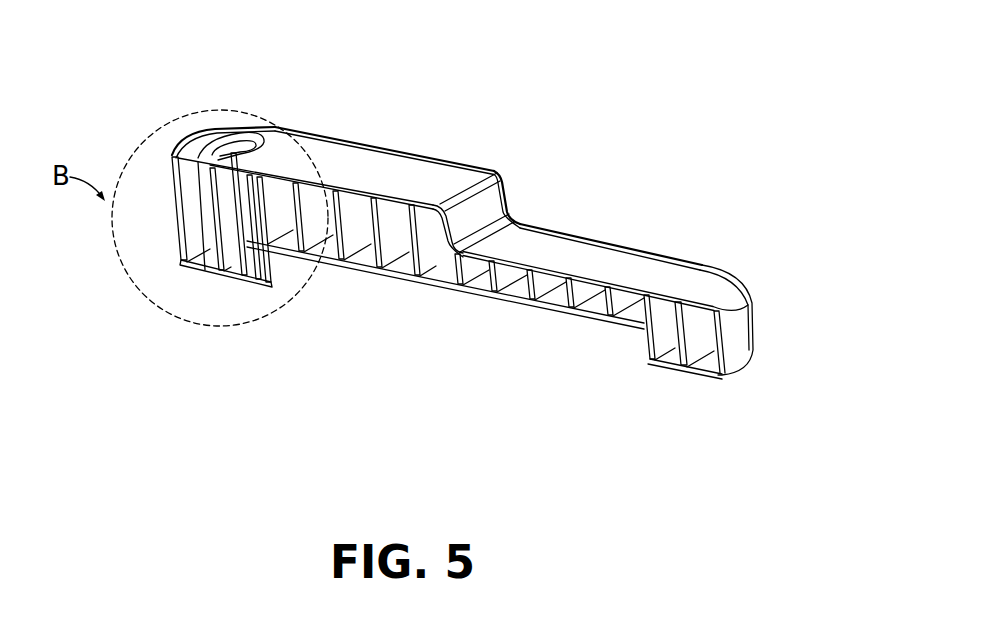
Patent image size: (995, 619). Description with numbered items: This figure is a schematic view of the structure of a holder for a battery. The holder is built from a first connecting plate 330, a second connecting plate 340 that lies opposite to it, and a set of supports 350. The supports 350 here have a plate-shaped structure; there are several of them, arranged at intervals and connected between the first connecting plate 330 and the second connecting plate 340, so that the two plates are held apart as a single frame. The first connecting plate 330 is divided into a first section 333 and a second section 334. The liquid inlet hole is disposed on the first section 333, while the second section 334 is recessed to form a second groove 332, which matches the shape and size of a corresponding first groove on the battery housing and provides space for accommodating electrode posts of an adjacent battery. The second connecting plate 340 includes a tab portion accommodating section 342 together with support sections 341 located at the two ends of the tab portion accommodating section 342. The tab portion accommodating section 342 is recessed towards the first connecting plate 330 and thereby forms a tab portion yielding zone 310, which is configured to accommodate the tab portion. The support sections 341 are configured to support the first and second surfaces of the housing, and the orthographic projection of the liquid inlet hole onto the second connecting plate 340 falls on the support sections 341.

The tab portion yielding zone 310 is at (472, 312).
The first connecting plate 330 is at (598, 103).
The first section 333 is at (368, 163).
The second section 334 is at (573, 257).
The second groove 332 is at (620, 225).
The second connecting plate 340 is at (665, 441).
The tab portion accommodating section 342 is at (580, 315).
The support sections 341 is at (675, 362).
The supports 350 is at (410, 252).